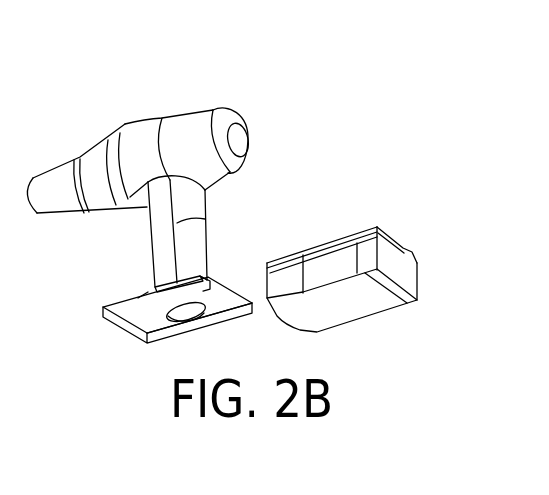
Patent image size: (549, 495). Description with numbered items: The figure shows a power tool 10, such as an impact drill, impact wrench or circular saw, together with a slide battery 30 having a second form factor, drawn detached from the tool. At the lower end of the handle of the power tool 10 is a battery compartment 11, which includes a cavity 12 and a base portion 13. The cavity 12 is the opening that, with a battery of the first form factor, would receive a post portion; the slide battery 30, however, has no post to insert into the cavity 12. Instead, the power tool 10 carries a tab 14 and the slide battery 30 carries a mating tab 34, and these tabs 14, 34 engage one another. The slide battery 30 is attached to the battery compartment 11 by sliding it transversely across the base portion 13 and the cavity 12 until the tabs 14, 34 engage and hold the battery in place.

The power tool 10 is at (240, 98).
The battery compartment 11 is at (145, 304).
The cavity 12 is at (185, 302).
The base portion 13 is at (212, 280).
The tab 14 is at (213, 318).
The slide battery 30 is at (358, 257).
The tab 34 is at (327, 240).